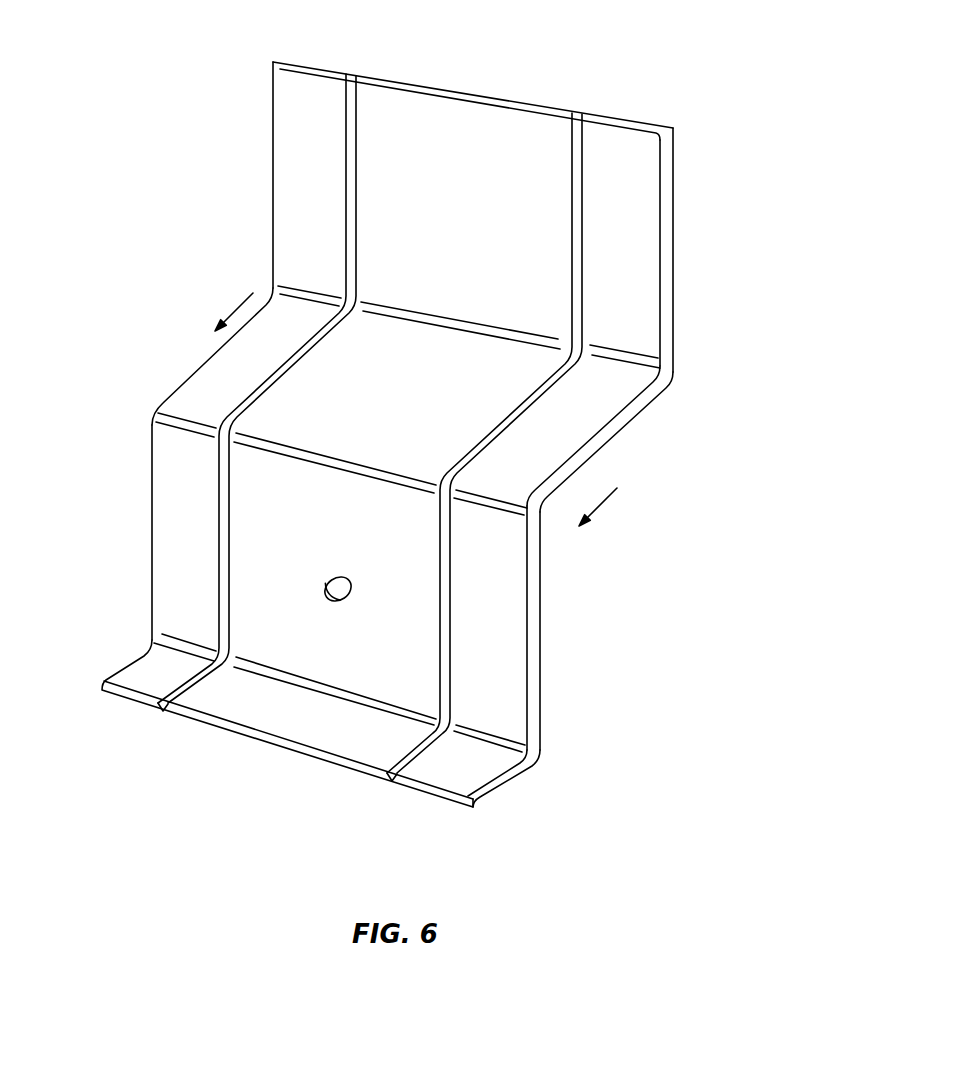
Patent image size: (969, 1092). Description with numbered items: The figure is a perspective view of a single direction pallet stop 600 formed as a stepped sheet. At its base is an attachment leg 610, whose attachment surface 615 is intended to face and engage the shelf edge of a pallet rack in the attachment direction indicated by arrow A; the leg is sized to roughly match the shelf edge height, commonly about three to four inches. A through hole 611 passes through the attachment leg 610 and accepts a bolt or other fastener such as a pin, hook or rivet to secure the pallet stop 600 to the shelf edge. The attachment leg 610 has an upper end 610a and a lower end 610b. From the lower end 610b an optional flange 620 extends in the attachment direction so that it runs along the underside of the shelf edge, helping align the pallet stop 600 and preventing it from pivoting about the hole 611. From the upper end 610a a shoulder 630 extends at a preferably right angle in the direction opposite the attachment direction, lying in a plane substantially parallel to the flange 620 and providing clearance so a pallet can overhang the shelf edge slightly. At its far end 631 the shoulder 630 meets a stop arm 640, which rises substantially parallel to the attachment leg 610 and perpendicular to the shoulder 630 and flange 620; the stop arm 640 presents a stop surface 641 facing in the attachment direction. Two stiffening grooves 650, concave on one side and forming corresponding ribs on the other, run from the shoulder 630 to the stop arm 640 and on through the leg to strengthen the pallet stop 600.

The single direction pallet stop 600 is at (207, 115).
The attachment leg 610 is at (150, 567).
The upper end 610a is at (277, 443).
The lower end 610b is at (297, 683).
The through hole 611 is at (344, 576).
The attachment surface 615 is at (183, 497).
The flange 620 is at (270, 744).
The shoulder 630 is at (196, 373).
The far end 631 is at (468, 327).
The stop arm 640 is at (676, 251).
The stop surface 641 is at (643, 273).
The stiffening grooves 650 is at (354, 75).